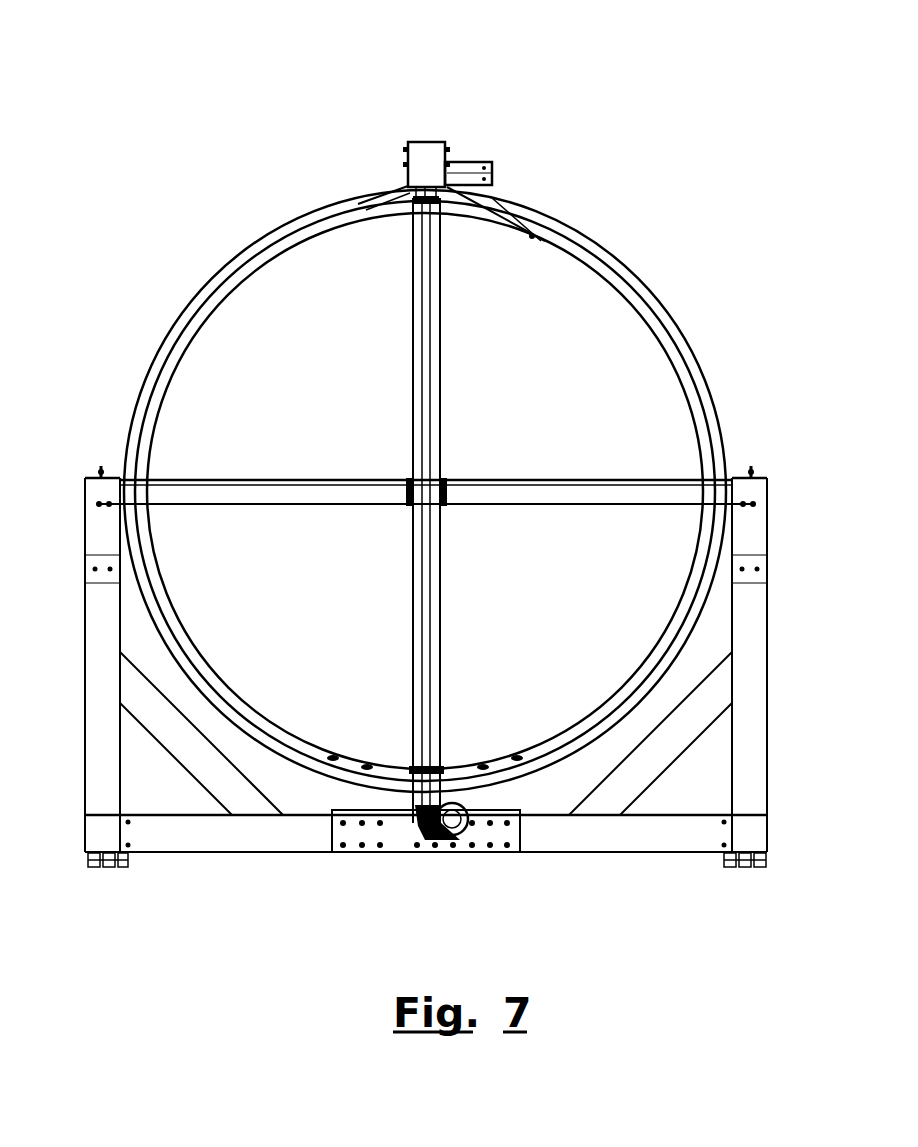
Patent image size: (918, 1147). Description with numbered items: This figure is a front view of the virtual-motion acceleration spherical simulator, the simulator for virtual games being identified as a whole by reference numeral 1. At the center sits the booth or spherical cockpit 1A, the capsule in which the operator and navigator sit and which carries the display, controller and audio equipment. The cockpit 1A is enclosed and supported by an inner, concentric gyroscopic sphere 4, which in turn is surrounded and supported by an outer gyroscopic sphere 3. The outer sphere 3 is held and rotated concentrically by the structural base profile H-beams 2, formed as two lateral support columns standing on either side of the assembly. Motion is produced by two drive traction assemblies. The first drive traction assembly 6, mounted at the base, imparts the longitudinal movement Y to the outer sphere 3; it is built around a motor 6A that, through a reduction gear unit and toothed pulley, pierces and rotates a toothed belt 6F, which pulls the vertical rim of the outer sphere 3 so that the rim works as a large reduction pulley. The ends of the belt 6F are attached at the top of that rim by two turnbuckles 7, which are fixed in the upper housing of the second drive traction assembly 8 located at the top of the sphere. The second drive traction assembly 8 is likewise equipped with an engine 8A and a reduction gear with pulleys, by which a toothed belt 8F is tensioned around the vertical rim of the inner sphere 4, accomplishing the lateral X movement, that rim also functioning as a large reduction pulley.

The simulator for virtual games 1 is at (438, 455).
The spherical cockpit 1A is at (275, 415).
The structural base profile H-beams 2 is at (207, 828).
The outer gyroscopic sphere 3 is at (618, 272).
The inner gyroscopic sphere 4 is at (655, 340).
The first drive traction assembly 6 is at (372, 828).
The motor 6A is at (450, 838).
The toothed belt 6F is at (420, 258).
The turnbuckles 7 is at (405, 182).
The second drive traction assembly 8 is at (424, 155).
The engine 8A is at (490, 160).
The toothed belt 8F is at (515, 217).